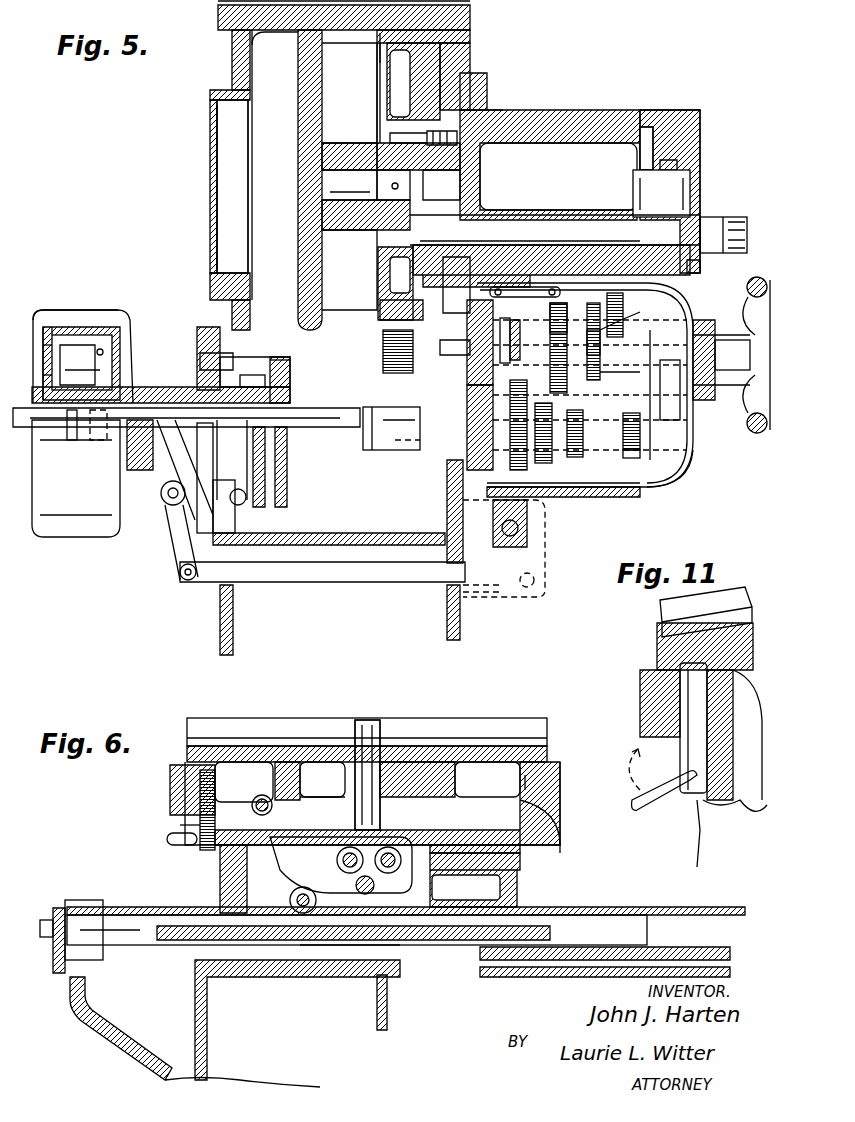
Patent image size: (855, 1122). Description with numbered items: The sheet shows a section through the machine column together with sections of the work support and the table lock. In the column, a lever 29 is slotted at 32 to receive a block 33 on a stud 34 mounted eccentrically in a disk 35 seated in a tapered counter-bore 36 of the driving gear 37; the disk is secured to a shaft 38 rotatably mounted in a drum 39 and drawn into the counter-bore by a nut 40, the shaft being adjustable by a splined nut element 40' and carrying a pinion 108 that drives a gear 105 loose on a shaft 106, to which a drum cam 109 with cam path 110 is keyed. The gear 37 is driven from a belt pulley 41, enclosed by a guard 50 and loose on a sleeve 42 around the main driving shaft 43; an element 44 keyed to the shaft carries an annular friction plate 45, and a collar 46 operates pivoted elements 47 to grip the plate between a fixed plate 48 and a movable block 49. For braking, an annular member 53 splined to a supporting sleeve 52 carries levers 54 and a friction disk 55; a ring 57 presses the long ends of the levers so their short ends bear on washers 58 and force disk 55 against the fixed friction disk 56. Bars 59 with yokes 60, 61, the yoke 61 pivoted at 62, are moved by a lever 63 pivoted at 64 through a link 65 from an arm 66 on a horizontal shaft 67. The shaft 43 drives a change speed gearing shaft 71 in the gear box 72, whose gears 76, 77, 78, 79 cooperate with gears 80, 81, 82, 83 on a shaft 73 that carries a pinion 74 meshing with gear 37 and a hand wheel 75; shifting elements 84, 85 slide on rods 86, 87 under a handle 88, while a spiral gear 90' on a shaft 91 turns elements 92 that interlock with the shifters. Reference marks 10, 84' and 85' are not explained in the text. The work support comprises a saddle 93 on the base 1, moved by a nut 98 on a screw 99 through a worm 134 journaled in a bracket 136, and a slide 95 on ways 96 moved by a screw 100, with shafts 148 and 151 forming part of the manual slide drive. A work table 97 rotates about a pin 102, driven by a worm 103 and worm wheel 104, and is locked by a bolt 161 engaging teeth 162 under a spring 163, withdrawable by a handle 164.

In FIG. 5, the lever 29 is at (278, 52).
In FIG. 5, the housing 10 is at (380, 50).
In FIG. 5, the driving gear 37 is at (395, 73).
In FIG. 5, the slot 32 is at (342, 110).
In FIG. 5, the block 33 is at (340, 150).
In FIG. 5, the stud 34 is at (340, 180).
In FIG. 5, the drum 39 is at (500, 135).
In FIG. 5, the cam path 110 is at (625, 128).
In FIG. 5, the drum cam 109 is at (698, 118).
In FIG. 5, the gear 105 is at (668, 162).
In FIG. 5, the shaft 106 is at (640, 185).
In FIG. 5, the shaft 38 is at (505, 232).
In FIG. 5, the nut 40 is at (729, 214).
In FIG. 5, the splined nut element 40' is at (713, 223).
In FIG. 5, the pinion 108 is at (700, 265).
In FIG. 5, the disk 35 is at (380, 280).
In FIG. 5, the tapered counter-bore 36 is at (385, 308).
In FIG. 5, the shaft 91 is at (465, 333).
In FIG. 5, the rod 87 is at (478, 373).
In FIG. 5, the rod 86 is at (478, 405).
In FIG. 5, the pinion 74 is at (400, 372).
In FIG. 5, the gear 80 is at (503, 322).
In FIG. 5, the spiral gear 90' is at (530, 334).
In FIG. 5, the gear 81 is at (560, 315).
In FIG. 5, the gear 82 is at (605, 315).
In FIG. 5, the elements 92 is at (585, 330).
In FIG. 5, the gear 83 is at (600, 330).
In FIG. 5, the shaft 85' is at (645, 362).
In FIG. 5, the shifting element 85 is at (693, 402).
In FIG. 5, the shaft 73 is at (712, 365).
In FIG. 5, the hand wheel 75 is at (765, 432).
In FIG. 5, the shifting element 84 is at (619, 446).
In FIG. 5, the gear 84' is at (612, 450).
In FIG. 5, the gear 79 is at (620, 447).
In FIG. 5, the gear 77 is at (545, 458).
In FIG. 5, the gear 76 is at (520, 455).
In FIG. 5, the handle 88 is at (570, 428).
In FIG. 5, the gear 78 is at (568, 488).
In FIG. 5, the gear box 72 is at (663, 490).
In FIG. 5, the horizontal shaft 67 is at (520, 528).
In FIG. 5, the arm 66 is at (540, 543).
In FIG. 5, the movable block 49 is at (70, 327).
In FIG. 5, the belt pulley 41 is at (88, 327).
In FIG. 5, the pivoted elements 47 is at (95, 345).
In FIG. 5, the fixed plate 48 is at (42, 332).
In FIG. 5, the collar 46 is at (105, 362).
In FIG. 5, the annular friction plate 45 is at (45, 350).
In FIG. 5, the element 44 is at (50, 378).
In FIG. 5, the washers 58 is at (200, 358).
In FIG. 5, the ring 57 is at (215, 373).
In FIG. 5, the friction disk 55 is at (285, 375).
In FIG. 5, the friction disk 56 is at (285, 390).
In FIG. 5, the levers 54 is at (258, 393).
In FIG. 5, the supporting sleeve 52 is at (172, 390).
In FIG. 5, the annular member 53 is at (283, 415).
In FIG. 5, the sleeve 42 is at (68, 420).
In FIG. 5, the yoke 60 is at (88, 432).
In FIG. 5, the bars 59 is at (135, 432).
In FIG. 5, the yoke 61 is at (250, 437).
In FIG. 5, the main driving shaft 43 is at (348, 433).
In FIG. 5, the change speed gearing shaft 71 is at (400, 445).
In FIG. 5, the guard 50 is at (40, 537).
In FIG. 5, the pivot 64 is at (170, 498).
In FIG. 5, the lever 63 is at (178, 545).
In FIG. 5, the pivot 62 is at (243, 503).
In FIG. 5, the link 65 is at (330, 565).
In FIG. 6, the work table 97 is at (480, 735).
In FIG. 11, the work table 97 is at (660, 603).
In FIG. 6, the worm 103 is at (262, 800).
In FIG. 6, the screw 100 is at (335, 800).
In FIG. 6, the pin 102 is at (375, 795).
In FIG. 6, the worm wheel 104 is at (470, 800).
In FIG. 6, the teeth 162 is at (528, 787).
In FIG. 6, the ways 96 is at (455, 850).
In FIG. 6, the slide 95 is at (560, 830).
In FIG. 11, the slide 95 is at (705, 790).
In FIG. 6, the saddle 93 is at (520, 870).
In FIG. 6, the shaft 151 is at (485, 890).
In FIG. 6, the shaft 148 is at (410, 885).
In FIG. 6, the bracket 136 is at (298, 897).
In FIG. 6, the bolt 161 is at (185, 795).
In FIG. 11, the bolt 161 is at (645, 680).
In FIG. 6, the spring 163 is at (185, 825).
In FIG. 6, the handle 164 is at (182, 840).
In FIG. 11, the handle 164 is at (670, 805).
In FIG. 6, the worm 134 is at (290, 892).
In FIG. 6, the screw 99 is at (172, 925).
In FIG. 6, the nut 98 is at (355, 945).
In FIG. 6, the base 1 is at (100, 1035).